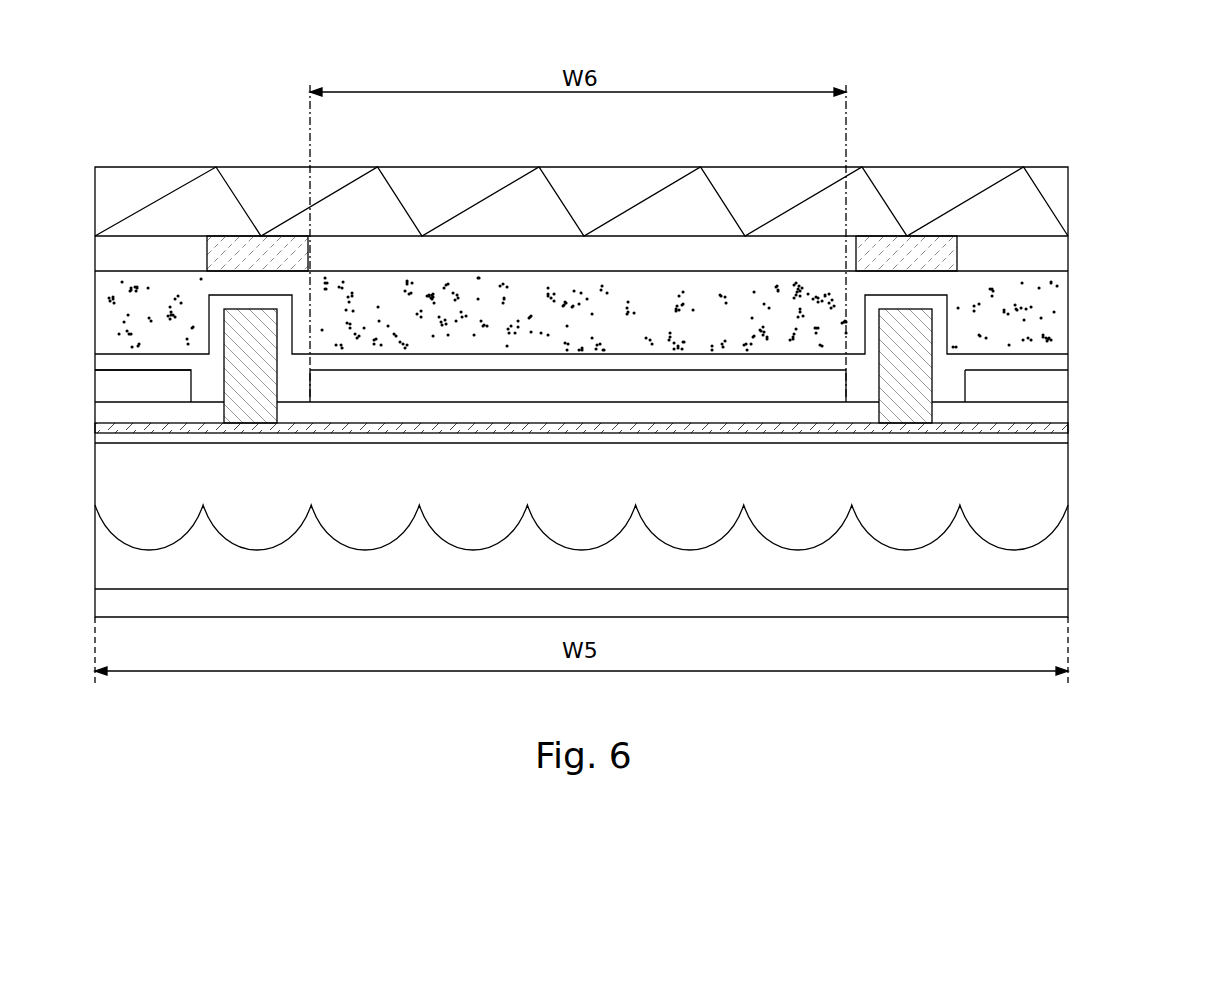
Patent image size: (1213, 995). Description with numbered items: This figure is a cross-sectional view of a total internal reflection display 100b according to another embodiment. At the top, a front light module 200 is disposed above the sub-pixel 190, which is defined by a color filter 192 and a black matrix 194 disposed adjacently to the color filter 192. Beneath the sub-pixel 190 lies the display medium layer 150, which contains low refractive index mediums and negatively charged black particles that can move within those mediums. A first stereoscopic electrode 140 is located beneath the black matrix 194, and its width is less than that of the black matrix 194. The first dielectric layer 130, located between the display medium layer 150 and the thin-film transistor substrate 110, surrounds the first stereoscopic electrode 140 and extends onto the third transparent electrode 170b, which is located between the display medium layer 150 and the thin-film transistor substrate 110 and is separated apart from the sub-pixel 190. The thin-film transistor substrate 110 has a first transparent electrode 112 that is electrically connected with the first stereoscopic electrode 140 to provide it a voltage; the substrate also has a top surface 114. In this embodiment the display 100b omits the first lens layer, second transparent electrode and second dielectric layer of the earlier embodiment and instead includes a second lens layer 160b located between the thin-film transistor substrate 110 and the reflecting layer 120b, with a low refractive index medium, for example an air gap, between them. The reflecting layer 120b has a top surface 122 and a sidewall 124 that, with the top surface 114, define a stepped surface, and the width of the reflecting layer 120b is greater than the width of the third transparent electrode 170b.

The total internal reflection display 100b is at (86, 69).
The thin-film transistor substrate 110 is at (1065, 440).
The first transparent electrode 112 is at (1065, 428).
The top surface 114 is at (180, 410).
The reflecting layer 120b is at (1065, 603).
The top surface 122 is at (150, 364).
The sidewall 124 is at (170, 388).
The first dielectric layer 130 is at (1060, 360).
The first stereoscopic electrode 140 is at (917, 318).
The display medium layer 150 is at (1060, 290).
The second lens layer 160b is at (1060, 478).
The third transparent electrode 170b is at (1060, 385).
The sub-pixel 190 is at (592, 168).
The color filter 192 is at (840, 245).
The black matrix 194 is at (927, 245).
The front light module 200 is at (1045, 172).